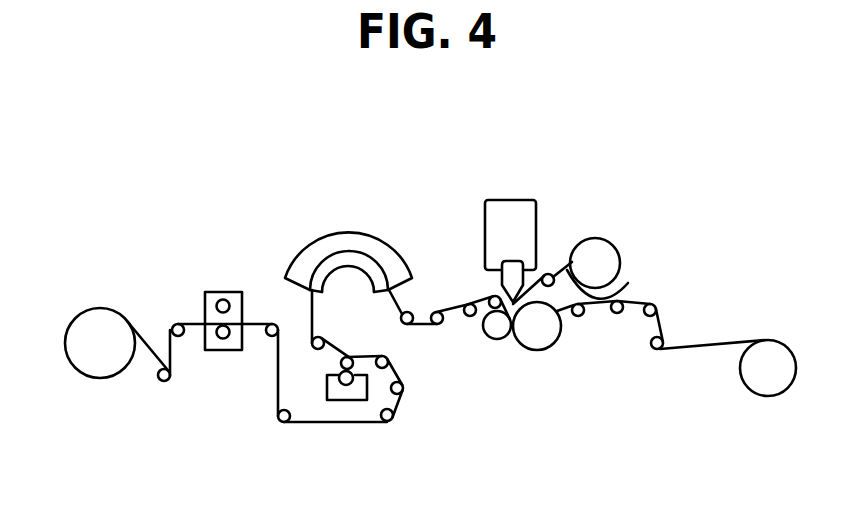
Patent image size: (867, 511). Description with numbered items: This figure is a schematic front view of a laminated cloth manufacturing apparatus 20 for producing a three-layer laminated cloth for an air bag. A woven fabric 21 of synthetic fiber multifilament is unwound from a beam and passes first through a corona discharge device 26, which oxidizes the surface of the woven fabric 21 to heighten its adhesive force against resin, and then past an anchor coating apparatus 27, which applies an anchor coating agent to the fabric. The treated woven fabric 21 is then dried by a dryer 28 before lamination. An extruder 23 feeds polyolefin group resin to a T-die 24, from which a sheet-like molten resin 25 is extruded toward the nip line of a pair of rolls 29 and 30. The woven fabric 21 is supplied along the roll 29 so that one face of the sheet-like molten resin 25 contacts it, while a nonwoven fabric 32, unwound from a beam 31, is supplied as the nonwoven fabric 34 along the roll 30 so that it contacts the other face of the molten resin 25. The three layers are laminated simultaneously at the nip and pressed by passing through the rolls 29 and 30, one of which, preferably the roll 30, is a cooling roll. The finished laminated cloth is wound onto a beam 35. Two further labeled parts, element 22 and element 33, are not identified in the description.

The laminated cloth manufacturing apparatus 20 is at (445, 143).
The woven fabric 21 is at (147, 363).
The supply roll 22 is at (98, 370).
The extruder 23 is at (524, 178).
The T-die 24 is at (507, 261).
The sheet-like molten resin 25 is at (523, 297).
The corona discharge device 26 is at (230, 292).
The anchor coating apparatus 27 is at (350, 400).
The dryer 28 is at (377, 238).
The roll 29 is at (493, 333).
The roll 30 is at (535, 341).
The beam 31 is at (603, 250).
The nonwoven fabric 32 is at (628, 283).
The guide roller 33 is at (492, 301).
The nonwoven fabric 34 is at (695, 348).
The beam 35 is at (762, 392).